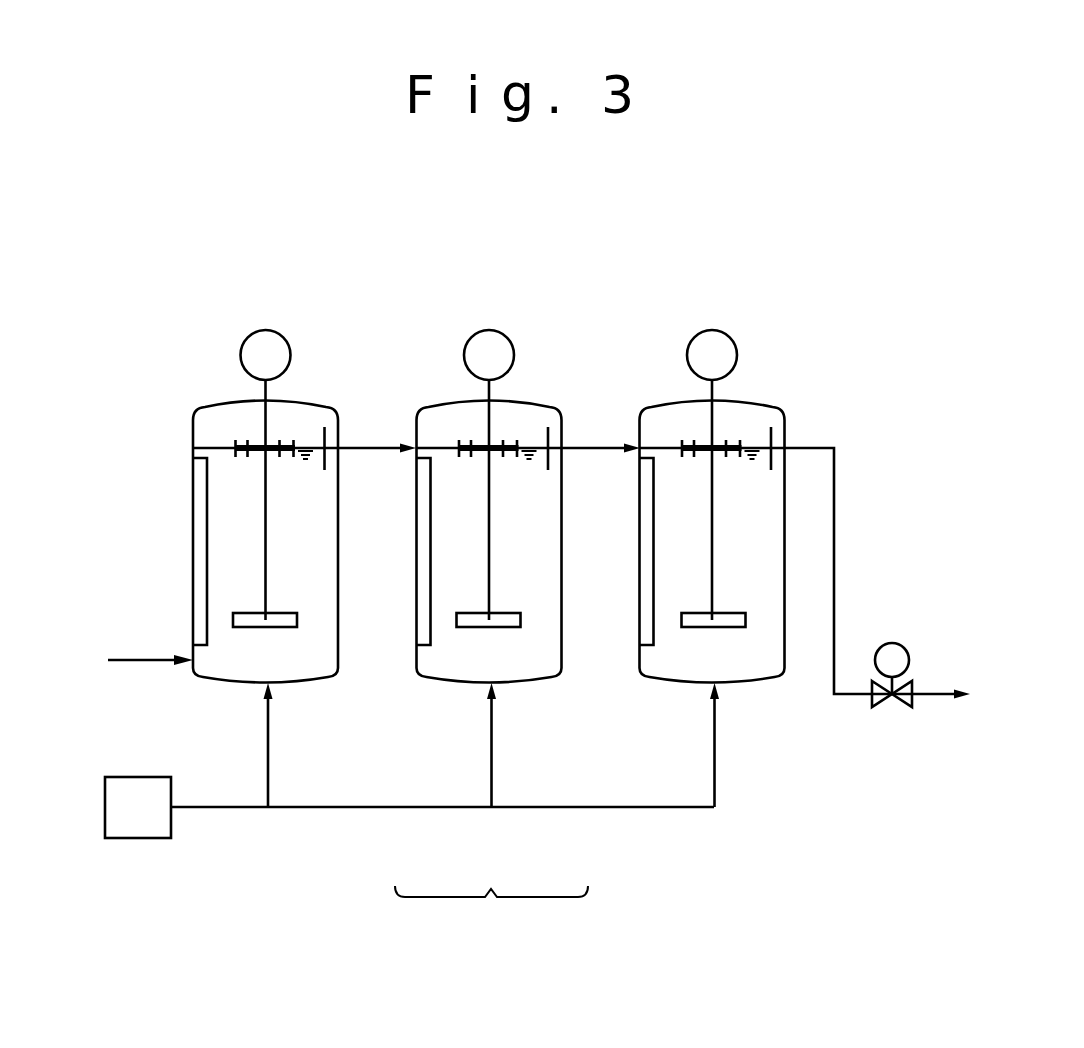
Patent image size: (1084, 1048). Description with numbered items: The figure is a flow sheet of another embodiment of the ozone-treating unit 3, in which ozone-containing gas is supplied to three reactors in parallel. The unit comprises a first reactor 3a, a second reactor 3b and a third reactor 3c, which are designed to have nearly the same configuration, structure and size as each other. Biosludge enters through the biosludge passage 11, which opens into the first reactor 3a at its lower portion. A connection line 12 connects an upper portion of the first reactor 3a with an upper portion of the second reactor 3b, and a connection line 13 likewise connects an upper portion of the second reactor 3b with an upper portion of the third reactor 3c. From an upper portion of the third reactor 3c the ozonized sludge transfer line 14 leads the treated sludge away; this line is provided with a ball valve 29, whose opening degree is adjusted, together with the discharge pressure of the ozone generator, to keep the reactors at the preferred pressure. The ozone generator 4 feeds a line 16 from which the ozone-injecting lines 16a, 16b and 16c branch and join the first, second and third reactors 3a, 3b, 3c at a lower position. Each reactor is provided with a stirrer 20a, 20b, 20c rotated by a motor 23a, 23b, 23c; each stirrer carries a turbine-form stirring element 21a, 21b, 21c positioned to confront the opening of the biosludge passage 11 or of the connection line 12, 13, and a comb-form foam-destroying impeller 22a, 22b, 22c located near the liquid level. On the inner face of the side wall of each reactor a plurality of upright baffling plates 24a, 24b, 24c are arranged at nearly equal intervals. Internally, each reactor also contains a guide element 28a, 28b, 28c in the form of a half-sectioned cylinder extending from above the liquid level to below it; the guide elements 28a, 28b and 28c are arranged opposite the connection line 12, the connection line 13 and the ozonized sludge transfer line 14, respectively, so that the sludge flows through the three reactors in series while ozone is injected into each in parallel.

The ozone-treating unit 3 is at (491, 917).
The first reactor 3a is at (292, 683).
The second reactor 3b is at (489, 646).
The third reactor 3c is at (667, 646).
The ozone generator 4 is at (137, 838).
The biosludge passage 11 is at (137, 660).
The connection line 12 is at (377, 445).
The connection line 13 is at (600, 445).
The ozonized sludge transfer line 14 is at (834, 492).
The line 16 is at (229, 807).
The ozone-injecting line 16a is at (268, 770).
The ozone-injecting line 16b is at (532, 745).
The ozone-injecting line 16c is at (755, 745).
The stirrer 20a is at (265, 533).
The stirrer 20b is at (419, 500).
The stirrer 20c is at (641, 500).
The stirring element 21a is at (296, 628).
The stirring element 21b is at (547, 675).
The stirring element 21c is at (754, 675).
The foam-destroying impeller 22a is at (250, 438).
The foam-destroying impeller 22b is at (457, 380).
The foam-destroying impeller 22c is at (680, 380).
The motor 23a is at (263, 330).
The motor 23b is at (496, 315).
The motor 23c is at (717, 315).
The baffling plates 24a is at (207, 601).
The baffling plates 24b is at (389, 551).
The baffling plates 24c is at (612, 551).
The guide element 28a is at (324, 431).
The guide element 28b is at (560, 400).
The guide element 28c is at (783, 400).
The ball valve 29 is at (892, 643).